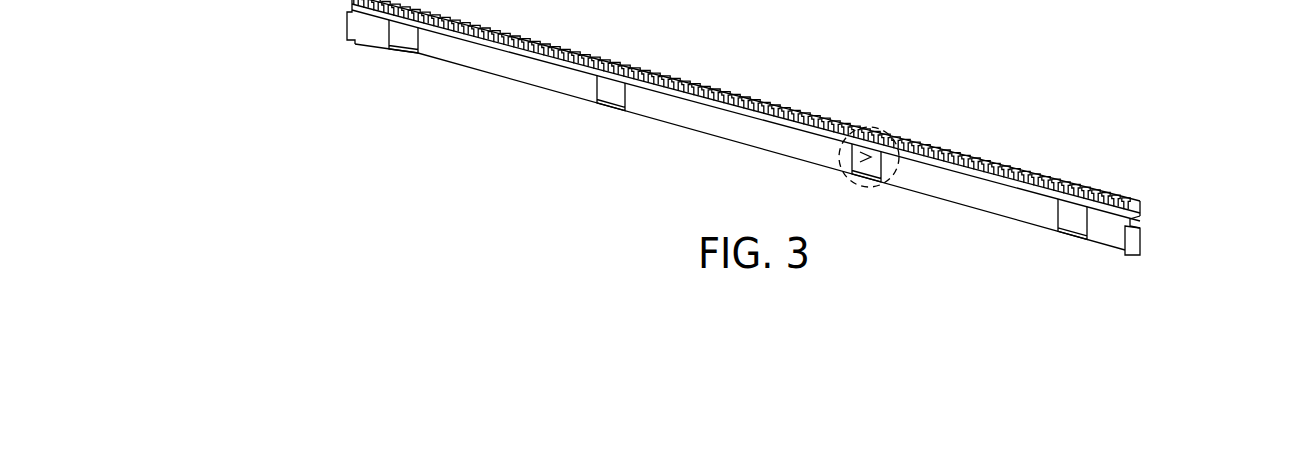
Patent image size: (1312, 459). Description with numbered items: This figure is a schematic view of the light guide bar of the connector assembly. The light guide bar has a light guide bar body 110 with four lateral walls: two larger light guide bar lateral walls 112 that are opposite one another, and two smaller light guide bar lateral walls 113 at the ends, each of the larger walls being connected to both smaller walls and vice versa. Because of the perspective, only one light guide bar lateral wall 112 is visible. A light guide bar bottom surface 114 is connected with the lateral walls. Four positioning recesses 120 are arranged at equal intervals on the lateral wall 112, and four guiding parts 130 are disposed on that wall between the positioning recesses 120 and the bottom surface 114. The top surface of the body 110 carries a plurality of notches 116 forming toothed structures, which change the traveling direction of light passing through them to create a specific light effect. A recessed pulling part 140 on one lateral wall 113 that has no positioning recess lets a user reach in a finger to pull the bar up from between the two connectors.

The light guide bar body 110 is at (1259, 55).
The light guide bar lateral wall 112 is at (781, 141).
The light guide bar lateral wall 113 is at (346, 26).
The light guide bar bottom surface 114 is at (683, 126).
The notch 116 is at (808, 115).
The positioning recess 120 is at (846, 163).
The guiding part 130 is at (873, 182).
The pulling part 140 is at (1137, 219).